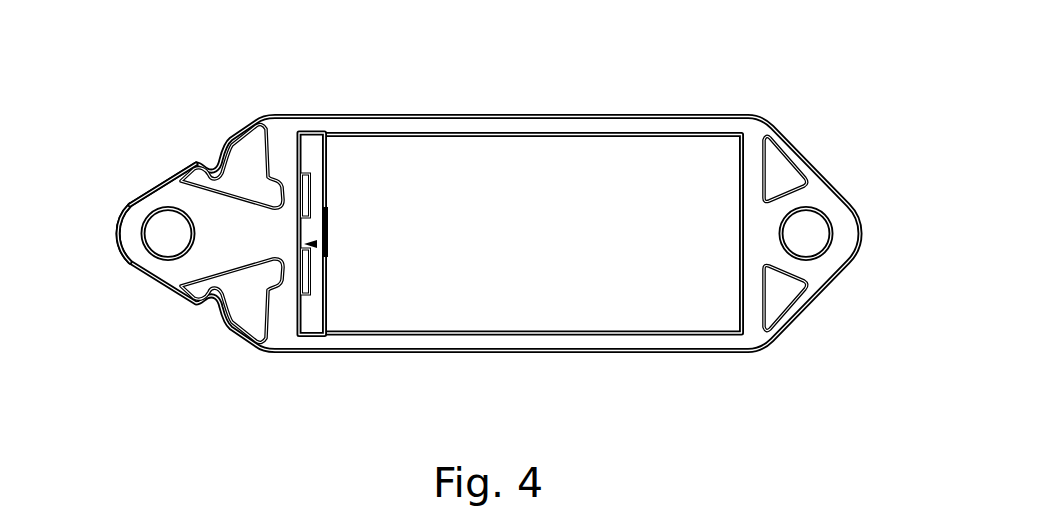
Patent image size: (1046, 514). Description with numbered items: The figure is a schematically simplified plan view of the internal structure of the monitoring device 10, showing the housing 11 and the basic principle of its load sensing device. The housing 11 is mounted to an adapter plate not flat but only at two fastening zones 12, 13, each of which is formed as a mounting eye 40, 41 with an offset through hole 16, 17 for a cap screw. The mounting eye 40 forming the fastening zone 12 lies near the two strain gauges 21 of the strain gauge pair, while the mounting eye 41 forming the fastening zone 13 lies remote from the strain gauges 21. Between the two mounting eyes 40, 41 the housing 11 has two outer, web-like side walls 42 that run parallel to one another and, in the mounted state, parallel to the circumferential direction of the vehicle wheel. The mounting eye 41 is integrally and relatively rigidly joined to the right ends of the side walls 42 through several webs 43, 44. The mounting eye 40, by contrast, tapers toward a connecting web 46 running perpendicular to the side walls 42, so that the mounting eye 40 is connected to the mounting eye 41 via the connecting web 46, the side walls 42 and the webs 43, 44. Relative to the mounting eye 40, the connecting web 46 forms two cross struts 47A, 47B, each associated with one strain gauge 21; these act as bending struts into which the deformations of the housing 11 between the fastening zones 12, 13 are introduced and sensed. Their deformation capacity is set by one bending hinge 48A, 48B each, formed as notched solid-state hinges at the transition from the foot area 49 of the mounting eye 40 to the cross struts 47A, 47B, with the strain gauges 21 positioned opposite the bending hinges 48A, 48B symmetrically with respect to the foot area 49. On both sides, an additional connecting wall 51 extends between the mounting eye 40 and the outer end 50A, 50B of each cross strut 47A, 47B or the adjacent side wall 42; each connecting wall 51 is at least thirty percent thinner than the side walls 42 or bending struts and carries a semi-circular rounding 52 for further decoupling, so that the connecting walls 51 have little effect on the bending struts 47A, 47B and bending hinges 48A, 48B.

The monitoring device 10 is at (720, 106).
The housing 11 is at (651, 106).
The fastening zone 12 is at (128, 238).
The fastening zone 13 is at (827, 280).
The through hole 16 is at (170, 240).
The through hole 17 is at (813, 232).
The strain gauges 21 is at (307, 195).
The mounting eye 40 is at (130, 218).
The mounting eye 41 is at (837, 263).
The side walls 42 is at (542, 131).
The web 43 is at (765, 227).
The webs 44 is at (798, 155).
The connecting web 46 is at (317, 244).
The cross strut 47A is at (307, 157).
The cross strut 47B is at (307, 305).
The bending hinge 48A is at (262, 126).
The bending hinge 48B is at (267, 270).
The foot area 49 is at (263, 238).
The outer end 50A is at (284, 134).
The outer end 50B is at (283, 338).
The connecting wall 51 is at (252, 118).
The semi-circular rounding 52 is at (212, 158).